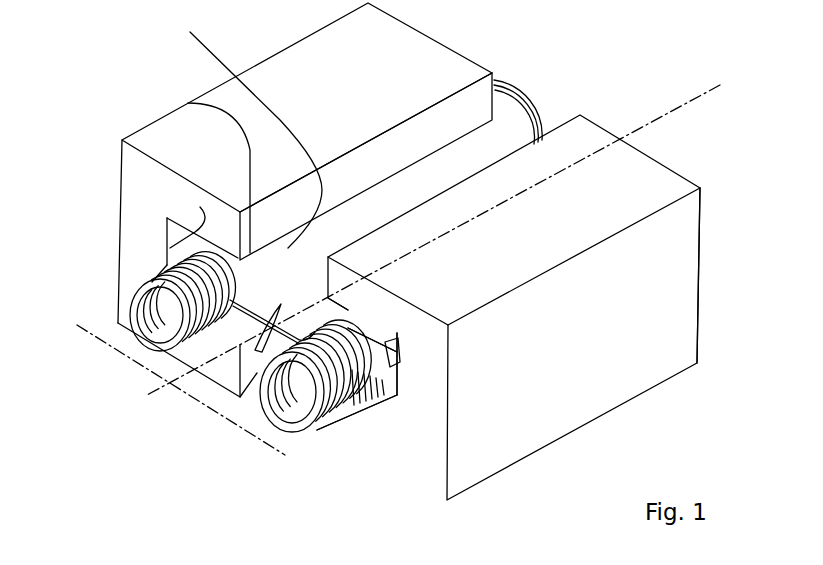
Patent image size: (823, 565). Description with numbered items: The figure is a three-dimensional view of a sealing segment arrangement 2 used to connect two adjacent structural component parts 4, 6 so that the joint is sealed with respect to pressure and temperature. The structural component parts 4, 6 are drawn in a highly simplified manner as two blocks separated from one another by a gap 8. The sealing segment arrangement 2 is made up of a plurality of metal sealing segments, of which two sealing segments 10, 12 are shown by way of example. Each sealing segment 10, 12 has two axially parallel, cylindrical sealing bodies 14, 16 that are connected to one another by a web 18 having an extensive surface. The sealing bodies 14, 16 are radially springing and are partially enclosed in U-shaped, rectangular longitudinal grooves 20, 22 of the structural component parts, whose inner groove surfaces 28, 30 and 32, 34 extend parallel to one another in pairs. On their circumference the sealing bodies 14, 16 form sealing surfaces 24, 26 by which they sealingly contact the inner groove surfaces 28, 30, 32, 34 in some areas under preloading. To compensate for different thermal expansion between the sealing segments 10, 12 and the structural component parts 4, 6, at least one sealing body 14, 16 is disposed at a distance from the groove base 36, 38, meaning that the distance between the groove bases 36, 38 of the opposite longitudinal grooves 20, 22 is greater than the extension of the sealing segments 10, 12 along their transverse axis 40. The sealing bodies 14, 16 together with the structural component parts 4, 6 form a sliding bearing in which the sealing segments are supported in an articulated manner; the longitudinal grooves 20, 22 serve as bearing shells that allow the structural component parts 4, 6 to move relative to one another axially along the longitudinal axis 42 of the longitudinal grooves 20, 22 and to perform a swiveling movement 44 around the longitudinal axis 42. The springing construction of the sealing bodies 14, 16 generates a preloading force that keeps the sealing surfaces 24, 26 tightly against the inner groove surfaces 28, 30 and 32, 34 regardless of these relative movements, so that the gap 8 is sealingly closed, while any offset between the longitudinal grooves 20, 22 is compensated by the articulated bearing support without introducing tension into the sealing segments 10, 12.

The sealing segment arrangement 2 is at (129, 410).
The structural component part 4 is at (426, 28).
The structural component part 6 is at (592, 108).
The gap 8 is at (418, 130).
The sealing segment 10 is at (272, 348).
The sealing segment 12 is at (510, 105).
The sealing body 14 is at (170, 256).
The sealing body 16 is at (345, 310).
The web 18 is at (700, 188).
The longitudinal groove 20 is at (165, 250).
The longitudinal groove 22 is at (345, 433).
The sealing surface 24 is at (246, 128).
The sealing surface 26 is at (352, 300).
The inner groove surface 28 is at (188, 103).
The inner groove surface 30 is at (277, 318).
The inner groove surface 32 is at (400, 371).
The inner groove surface 34 is at (373, 415).
The groove base 36 is at (398, 388).
The groove base 38 is at (200, 207).
The transverse axis 40 is at (77, 328).
The longitudinal axis 42 is at (663, 116).
The swiveling movement 44 is at (758, 95).